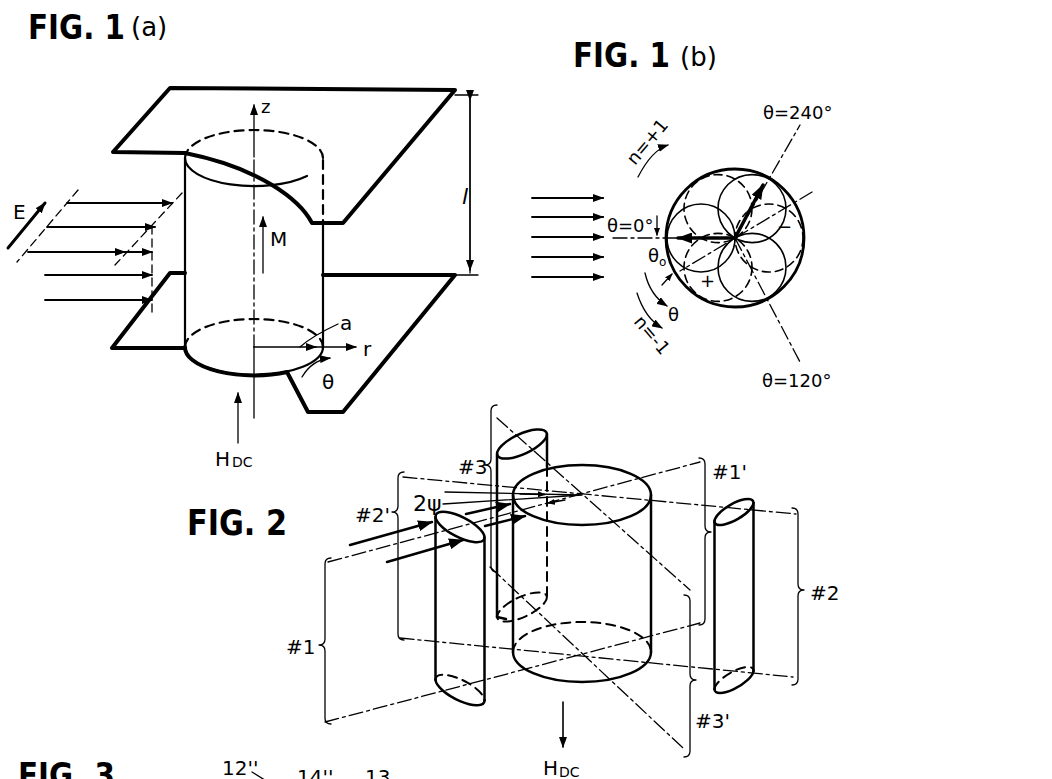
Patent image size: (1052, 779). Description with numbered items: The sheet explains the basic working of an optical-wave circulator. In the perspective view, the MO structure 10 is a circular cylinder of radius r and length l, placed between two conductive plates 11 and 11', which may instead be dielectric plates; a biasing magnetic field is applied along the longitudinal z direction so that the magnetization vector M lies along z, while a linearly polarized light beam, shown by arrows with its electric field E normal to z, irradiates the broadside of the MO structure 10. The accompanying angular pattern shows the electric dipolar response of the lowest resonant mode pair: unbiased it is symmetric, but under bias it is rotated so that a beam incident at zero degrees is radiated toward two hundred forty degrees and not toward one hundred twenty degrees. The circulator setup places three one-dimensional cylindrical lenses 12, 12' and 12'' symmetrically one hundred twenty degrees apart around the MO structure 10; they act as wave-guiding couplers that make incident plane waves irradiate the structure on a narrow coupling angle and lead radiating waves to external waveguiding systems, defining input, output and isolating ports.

In FIG. 1A, the MO structure 10 is at (201, 353).
In FIG. 1B, the MO structure 10 is at (728, 170).
In FIG. 2, the MO structure 10 is at (582, 678).
In FIG. 1A, the conductive plate 11 is at (284, 155).
In FIG. 1A, the conductive plate 11' is at (290, 342).
In FIG. 2, the cylindrical lens 12 is at (459, 623).
In FIG. 2, the cylindrical lens 12' is at (747, 617).
In FIG. 2, the cylindrical lens 12'' is at (553, 518).